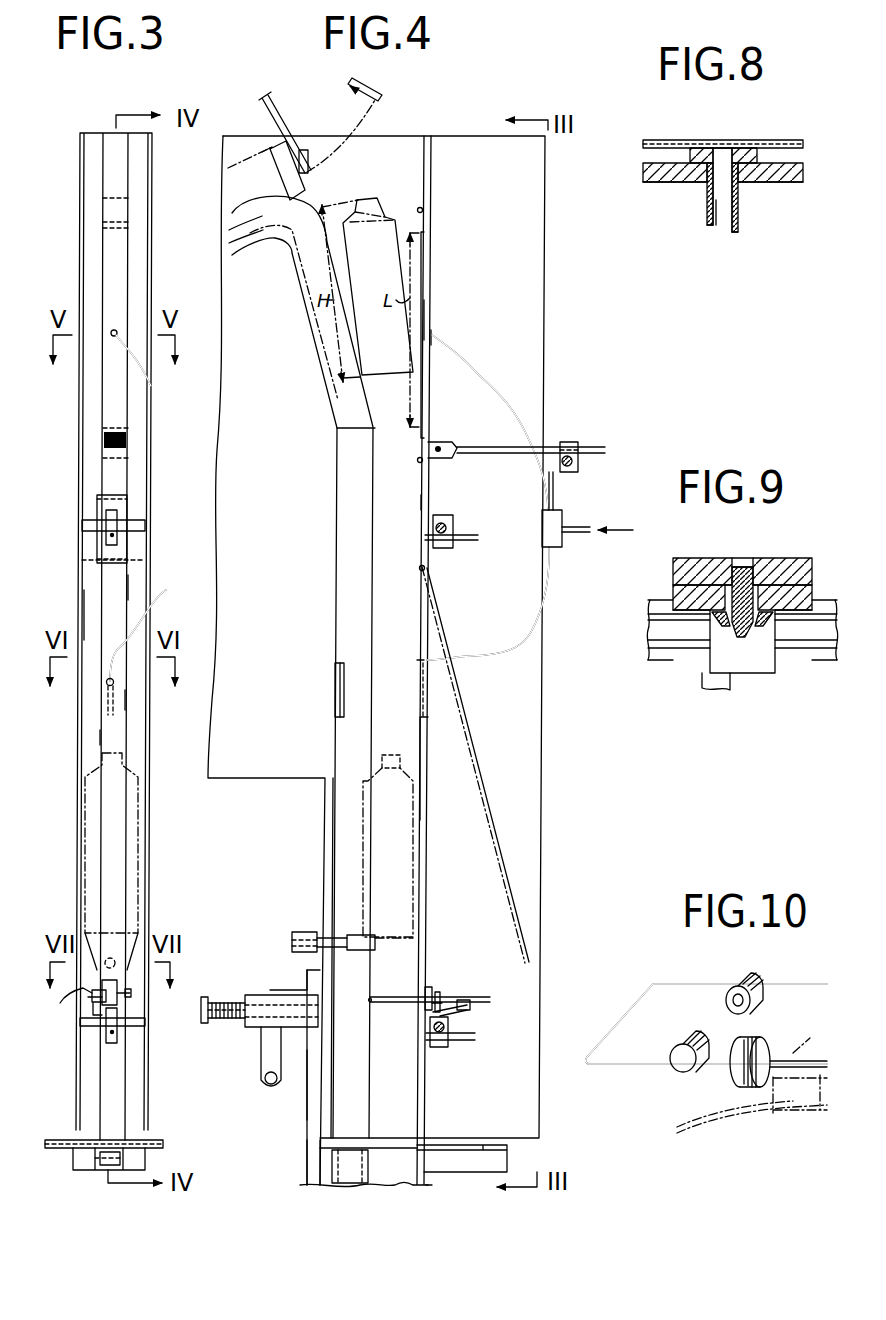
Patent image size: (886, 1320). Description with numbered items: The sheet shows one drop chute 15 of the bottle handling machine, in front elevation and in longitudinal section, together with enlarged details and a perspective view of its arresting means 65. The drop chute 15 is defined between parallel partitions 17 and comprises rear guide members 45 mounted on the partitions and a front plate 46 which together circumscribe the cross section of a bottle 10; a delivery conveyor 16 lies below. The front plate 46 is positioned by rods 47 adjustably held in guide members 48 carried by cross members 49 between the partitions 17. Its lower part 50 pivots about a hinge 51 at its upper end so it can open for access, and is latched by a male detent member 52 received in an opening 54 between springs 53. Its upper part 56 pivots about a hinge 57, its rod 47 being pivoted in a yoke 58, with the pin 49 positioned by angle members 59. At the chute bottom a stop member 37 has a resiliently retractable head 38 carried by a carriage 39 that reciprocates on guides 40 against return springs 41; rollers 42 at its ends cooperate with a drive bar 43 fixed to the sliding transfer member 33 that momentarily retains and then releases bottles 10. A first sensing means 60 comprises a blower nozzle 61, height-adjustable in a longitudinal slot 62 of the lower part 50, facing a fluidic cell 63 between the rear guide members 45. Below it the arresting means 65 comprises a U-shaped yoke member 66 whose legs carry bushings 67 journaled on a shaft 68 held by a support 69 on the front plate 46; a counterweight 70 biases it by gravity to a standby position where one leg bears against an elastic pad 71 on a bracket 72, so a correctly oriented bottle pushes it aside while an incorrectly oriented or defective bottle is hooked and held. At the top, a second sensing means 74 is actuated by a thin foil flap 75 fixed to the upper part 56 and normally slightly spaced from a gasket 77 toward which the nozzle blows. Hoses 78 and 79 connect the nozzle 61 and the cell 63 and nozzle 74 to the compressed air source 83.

In FIG. 4, the bottle 10 is at (388, 386).
In FIG. 3, the drop chute 15 is at (131, 705).
In FIG. 4, the drop chute 15 is at (370, 429).
In FIG. 3, the delivery conveyor 16 is at (97, 741).
In FIG. 3, the partition 17 is at (80, 172).
In FIG. 4, the partition 17 is at (498, 187).
In FIG. 4, the sliding transfer member 33 is at (304, 1157).
In FIG. 4, the stop member 37 is at (345, 933).
In FIG. 4, the head 38 is at (375, 947).
In FIG. 4, the carriage 39 is at (250, 986).
In FIG. 4, the guide 40 is at (234, 1022).
In FIG. 4, the return spring 41 is at (209, 1025).
In FIG. 4, the roller 42 is at (268, 1090).
In FIG. 4, the drive bar 43 is at (314, 1085).
In FIG. 3, the rear guide member 45 is at (137, 588).
In FIG. 4, the rear guide member 45 is at (365, 420).
In FIG. 3, the front plate 46 is at (109, 628).
In FIG. 4, the front plate 46 is at (437, 742).
In FIG. 8, the front plate 46 is at (657, 186).
In FIG. 9, the front plate 46 is at (689, 555).
In FIG. 3, the rod 47 is at (111, 440).
In FIG. 4, the rod 47 is at (486, 455).
In FIG. 3, the guide member 48 is at (116, 511).
In FIG. 4, the guide member 48 is at (545, 440).
In FIG. 3, the cross member 49 is at (137, 525).
In FIG. 4, the cross member 49 is at (580, 463).
In FIG. 3, the lower part of front plate 50 is at (122, 744).
In FIG. 4, the lower part of front plate 50 is at (424, 820).
In FIG. 9, the lower part of front plate 50 is at (785, 594).
In FIG. 3, the hinge 51 is at (96, 561).
In FIG. 4, the hinge 51 is at (423, 567).
In FIG. 9, the male detent member 52 is at (747, 640).
In FIG. 9, the spring 53 is at (758, 634).
In FIG. 9, the opening 54 is at (737, 587).
In FIG. 3, the upper part of front plate 56 is at (125, 251).
In FIG. 4, the upper part of front plate 56 is at (432, 277).
In FIG. 8, the upper part of front plate 56 is at (682, 183).
In FIG. 3, the hinge 57 is at (96, 499).
In FIG. 4, the hinge 57 is at (423, 503).
In FIG. 3, the yoke 58 is at (109, 432).
In FIG. 4, the yoke 58 is at (450, 442).
In FIG. 4, the angle member 59 is at (566, 480).
In FIG. 4, the first sensing means 60 is at (411, 665).
In FIG. 4, the blower nozzle 61 is at (436, 662).
In FIG. 3, the longitudinal slot 62 is at (118, 682).
In FIG. 4, the fluidic cell 63 is at (335, 680).
In FIG. 3, the arresting means 65 is at (93, 987).
In FIG. 4, the arresting means 65 is at (486, 996).
In FIG. 10, the arresting means 65 is at (632, 1073).
In FIG. 10, the yoke member 66 is at (613, 1020).
In FIG. 10, the bushing 67 is at (693, 1040).
In FIG. 3, the shaft 68 is at (97, 968).
In FIG. 4, the shaft 68 is at (425, 1005).
In FIG. 9, the shaft 68 is at (684, 642).
In FIG. 3, the support 69 is at (118, 980).
In FIG. 4, the support 69 is at (425, 990).
In FIG. 3, the counterweight 70 is at (88, 990).
In FIG. 4, the counterweight 70 is at (440, 995).
In FIG. 10, the counterweight 70 is at (770, 1037).
In FIG. 3, the elastic pad 71 is at (87, 998).
In FIG. 4, the elastic pad 71 is at (470, 1007).
In FIG. 10, the elastic pad 71 is at (780, 1113).
In FIG. 3, the bracket 72 is at (93, 1015).
In FIG. 4, the bracket 72 is at (432, 1010).
In FIG. 9, the bracket 72 is at (712, 687).
In FIG. 10, the bracket 72 is at (688, 1130).
In FIG. 4, the second sensing means 74 is at (436, 333).
In FIG. 8, the second sensing means 74 is at (726, 161).
In FIG. 4, the flap 75 is at (415, 322).
In FIG. 8, the flap 75 is at (810, 138).
In FIG. 8, the gasket 77 is at (698, 147).
In FIG. 3, the hose 78 is at (165, 592).
In FIG. 4, the hose 78 is at (522, 634).
In FIG. 3, the hose 79 is at (161, 386).
In FIG. 4, the hose 79 is at (505, 400).
In FIG. 8, the hose 79 is at (723, 222).
In FIG. 4, the compressed air source 83 is at (594, 535).